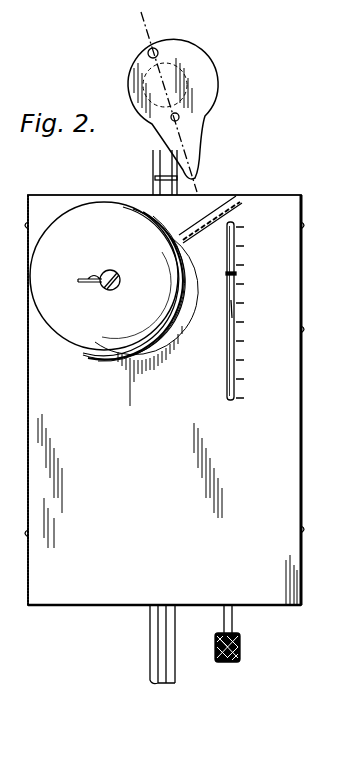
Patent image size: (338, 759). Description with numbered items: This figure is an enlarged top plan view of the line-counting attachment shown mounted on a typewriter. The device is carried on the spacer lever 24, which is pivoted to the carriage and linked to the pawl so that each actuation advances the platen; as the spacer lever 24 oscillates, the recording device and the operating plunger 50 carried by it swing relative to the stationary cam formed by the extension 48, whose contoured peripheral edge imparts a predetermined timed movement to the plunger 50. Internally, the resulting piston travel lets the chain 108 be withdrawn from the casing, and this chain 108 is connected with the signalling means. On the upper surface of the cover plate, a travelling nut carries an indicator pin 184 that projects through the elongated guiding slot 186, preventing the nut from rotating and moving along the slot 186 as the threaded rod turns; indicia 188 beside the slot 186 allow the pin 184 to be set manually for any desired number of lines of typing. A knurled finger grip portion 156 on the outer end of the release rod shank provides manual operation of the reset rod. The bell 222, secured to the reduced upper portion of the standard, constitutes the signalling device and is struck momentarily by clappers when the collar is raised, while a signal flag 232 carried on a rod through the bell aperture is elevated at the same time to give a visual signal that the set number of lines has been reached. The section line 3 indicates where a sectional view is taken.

The section line 3- 3 is at (146, 22).
The extension 48 is at (196, 163).
The operating plunger 50 is at (153, 185).
The chain or cable 108 is at (240, 196).
The bell 222 is at (84, 336).
The signal flag 232 is at (81, 283).
The indicator pin 184 is at (226, 276).
The elongated guiding slot 186 is at (227, 310).
The indicia 188 is at (250, 303).
The spacer lever 24 is at (150, 649).
The knurled finger grip portion 156 is at (241, 652).